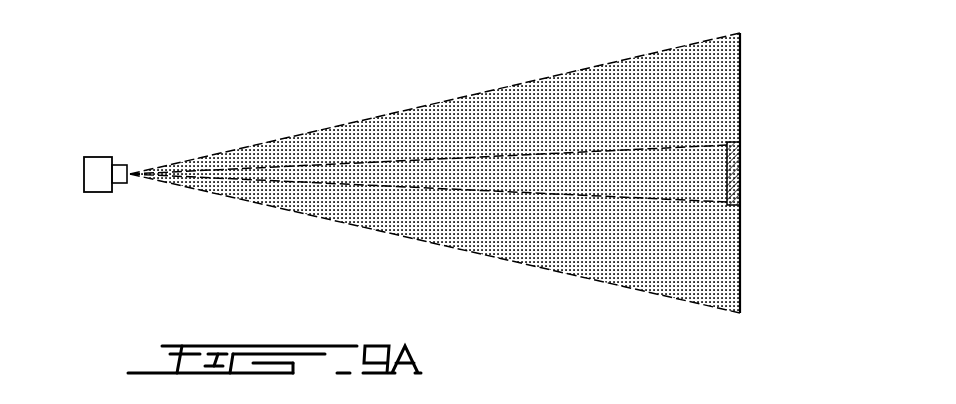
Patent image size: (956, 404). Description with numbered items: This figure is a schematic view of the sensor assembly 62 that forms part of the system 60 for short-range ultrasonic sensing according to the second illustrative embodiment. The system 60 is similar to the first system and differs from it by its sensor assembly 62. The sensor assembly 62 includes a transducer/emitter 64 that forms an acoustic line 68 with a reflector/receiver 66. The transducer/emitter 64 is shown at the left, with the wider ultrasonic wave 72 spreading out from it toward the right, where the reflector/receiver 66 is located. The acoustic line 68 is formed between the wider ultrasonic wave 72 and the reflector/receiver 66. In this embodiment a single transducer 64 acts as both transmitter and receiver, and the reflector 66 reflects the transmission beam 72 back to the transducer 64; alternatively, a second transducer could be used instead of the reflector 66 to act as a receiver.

The system for short-range ultrasonic sensing 60 is at (226, 115).
The sensor assembly 62 is at (140, 200).
The transducer/emitter 64 is at (100, 168).
The reflector/receiver 66 is at (731, 168).
The acoustic line 68 is at (427, 170).
The ultrasonic wave 72 is at (588, 247).